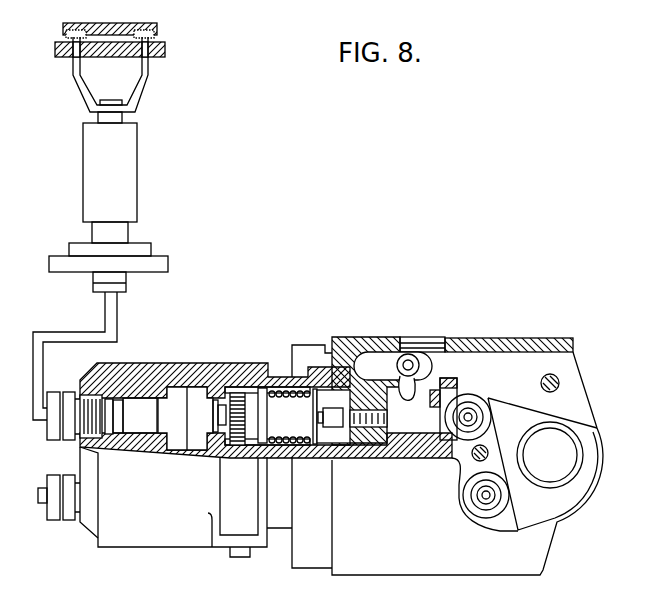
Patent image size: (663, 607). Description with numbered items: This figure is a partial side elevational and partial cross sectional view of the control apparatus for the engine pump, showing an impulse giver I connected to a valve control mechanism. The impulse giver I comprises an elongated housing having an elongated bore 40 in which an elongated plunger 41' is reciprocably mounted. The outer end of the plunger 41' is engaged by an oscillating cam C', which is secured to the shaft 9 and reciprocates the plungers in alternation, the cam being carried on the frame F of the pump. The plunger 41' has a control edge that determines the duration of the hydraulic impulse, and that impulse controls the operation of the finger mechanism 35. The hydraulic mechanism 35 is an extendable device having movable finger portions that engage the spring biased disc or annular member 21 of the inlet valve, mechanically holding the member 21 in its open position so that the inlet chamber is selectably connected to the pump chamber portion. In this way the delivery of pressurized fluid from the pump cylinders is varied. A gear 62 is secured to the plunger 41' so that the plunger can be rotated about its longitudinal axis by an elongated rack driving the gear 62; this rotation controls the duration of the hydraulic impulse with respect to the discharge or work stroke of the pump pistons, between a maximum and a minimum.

The movable spring biased disc or annular member 21 is at (163, 49).
The extendable hydraulic mechanism 35 is at (142, 93).
The impulse giver I is at (147, 407).
The plunger 41' is at (193, 395).
The bore 40 is at (251, 382).
The gear 62 is at (234, 445).
The frame F is at (547, 339).
The oscillating cam C' is at (543, 445).
The shaft 9 is at (563, 460).